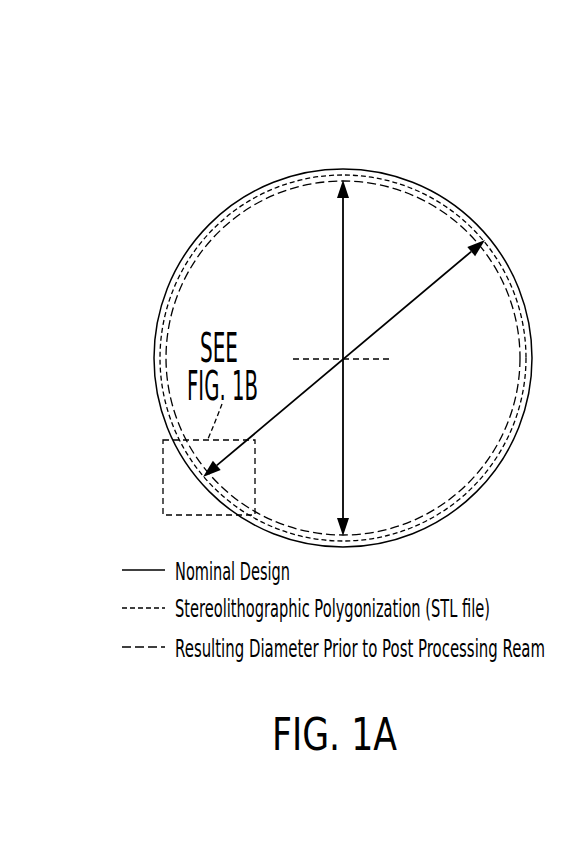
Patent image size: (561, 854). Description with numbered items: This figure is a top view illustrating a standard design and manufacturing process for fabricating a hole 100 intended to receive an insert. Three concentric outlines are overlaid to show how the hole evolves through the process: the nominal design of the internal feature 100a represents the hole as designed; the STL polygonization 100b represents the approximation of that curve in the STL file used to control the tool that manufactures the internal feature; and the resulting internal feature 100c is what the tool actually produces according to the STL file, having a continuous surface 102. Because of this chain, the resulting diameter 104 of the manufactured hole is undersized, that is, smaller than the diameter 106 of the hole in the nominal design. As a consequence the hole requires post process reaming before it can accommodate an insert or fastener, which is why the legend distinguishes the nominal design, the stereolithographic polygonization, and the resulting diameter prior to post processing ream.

The hole 100 is at (315, 358).
The nominal design of the internal feature 100a is at (192, 248).
The STL polygonization 100b is at (158, 368).
The resulting internal feature 100c is at (289, 185).
The continuous surface 102 is at (420, 184).
The resulting diameter 104 is at (345, 411).
The diameter of the hole in the nominal design 106 is at (405, 310).